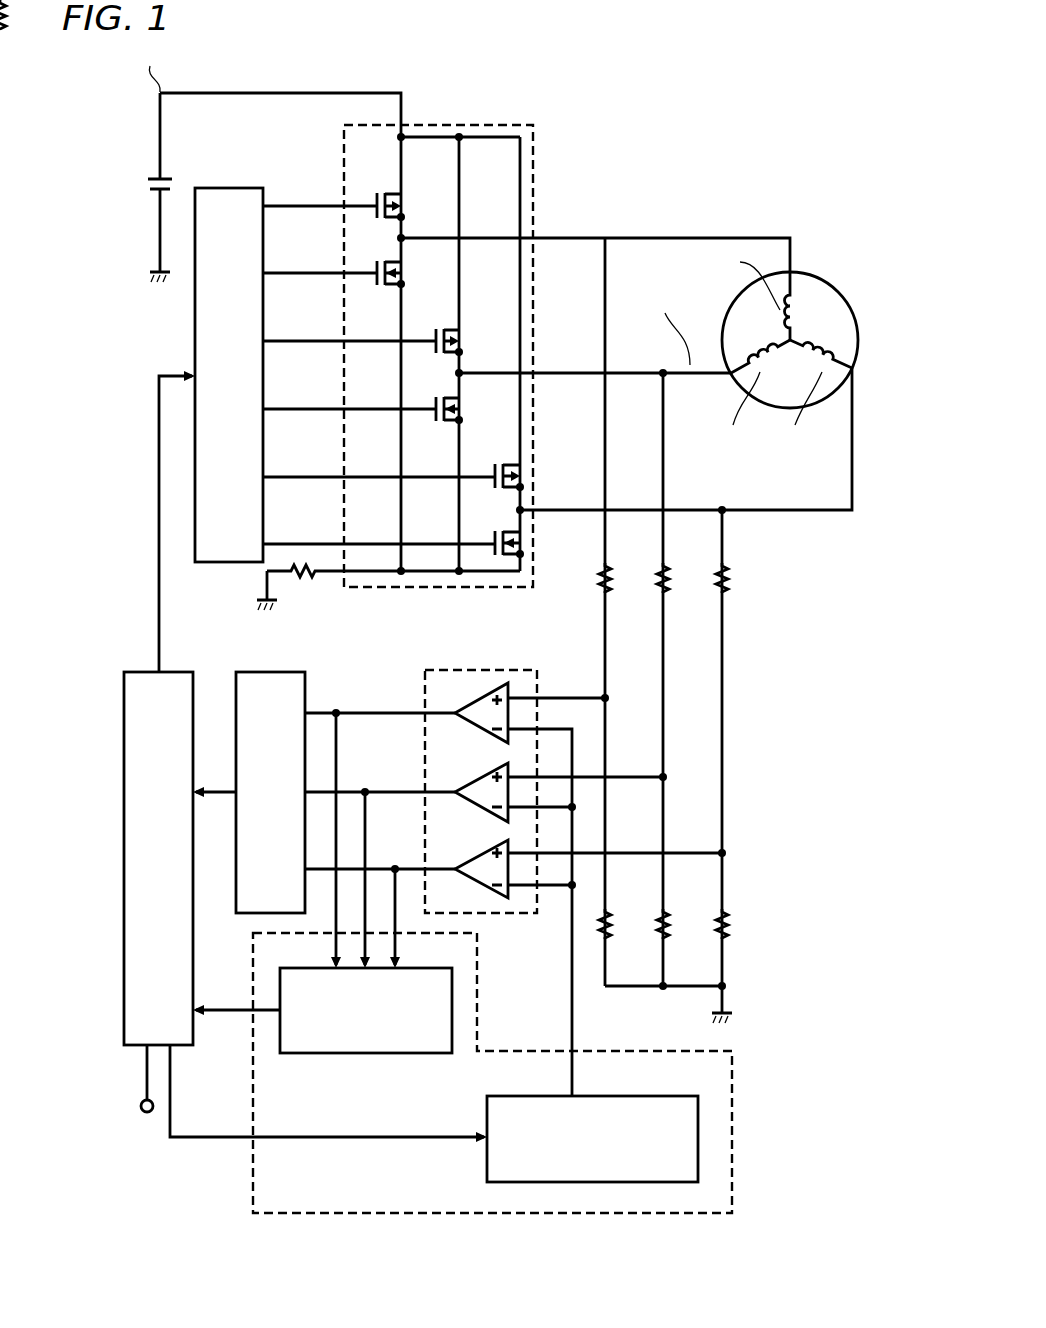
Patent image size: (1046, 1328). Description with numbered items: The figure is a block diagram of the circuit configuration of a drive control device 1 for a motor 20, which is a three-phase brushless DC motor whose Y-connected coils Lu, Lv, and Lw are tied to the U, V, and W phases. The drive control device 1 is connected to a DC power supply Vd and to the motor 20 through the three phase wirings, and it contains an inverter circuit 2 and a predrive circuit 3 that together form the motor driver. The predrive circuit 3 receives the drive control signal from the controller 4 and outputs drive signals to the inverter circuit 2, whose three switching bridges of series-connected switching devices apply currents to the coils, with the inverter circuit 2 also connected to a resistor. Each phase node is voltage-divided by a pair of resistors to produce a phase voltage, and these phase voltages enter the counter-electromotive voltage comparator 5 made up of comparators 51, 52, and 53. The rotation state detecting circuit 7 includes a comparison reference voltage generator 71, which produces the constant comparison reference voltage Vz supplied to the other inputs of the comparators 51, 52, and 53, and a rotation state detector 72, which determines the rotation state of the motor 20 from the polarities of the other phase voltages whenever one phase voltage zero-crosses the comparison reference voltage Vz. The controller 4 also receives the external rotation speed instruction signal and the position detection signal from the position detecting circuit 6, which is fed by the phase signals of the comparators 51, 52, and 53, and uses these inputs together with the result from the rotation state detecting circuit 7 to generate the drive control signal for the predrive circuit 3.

The drive control device 1 is at (597, 133).
The inverter circuit 2 is at (493, 124).
The predrive circuit 3 is at (230, 188).
The controller 4 is at (183, 1047).
The counter-electromotive voltage comparator 5 is at (495, 668).
The position detecting circuit 6 is at (270, 672).
The rotation state detecting circuit 7 is at (250, 1160).
The motor 20 is at (816, 273).
The comparator 51 is at (462, 702).
The comparator 52 is at (470, 785).
The comparator 53 is at (470, 862).
The comparison reference voltage generator 71 is at (658, 1096).
The rotation state detector 72 is at (400, 1055).